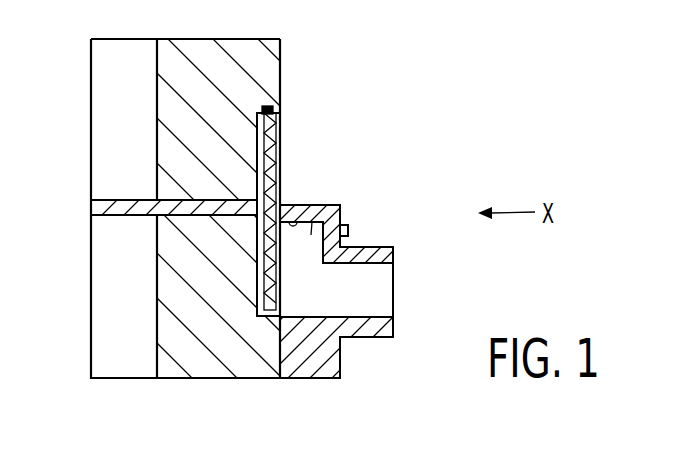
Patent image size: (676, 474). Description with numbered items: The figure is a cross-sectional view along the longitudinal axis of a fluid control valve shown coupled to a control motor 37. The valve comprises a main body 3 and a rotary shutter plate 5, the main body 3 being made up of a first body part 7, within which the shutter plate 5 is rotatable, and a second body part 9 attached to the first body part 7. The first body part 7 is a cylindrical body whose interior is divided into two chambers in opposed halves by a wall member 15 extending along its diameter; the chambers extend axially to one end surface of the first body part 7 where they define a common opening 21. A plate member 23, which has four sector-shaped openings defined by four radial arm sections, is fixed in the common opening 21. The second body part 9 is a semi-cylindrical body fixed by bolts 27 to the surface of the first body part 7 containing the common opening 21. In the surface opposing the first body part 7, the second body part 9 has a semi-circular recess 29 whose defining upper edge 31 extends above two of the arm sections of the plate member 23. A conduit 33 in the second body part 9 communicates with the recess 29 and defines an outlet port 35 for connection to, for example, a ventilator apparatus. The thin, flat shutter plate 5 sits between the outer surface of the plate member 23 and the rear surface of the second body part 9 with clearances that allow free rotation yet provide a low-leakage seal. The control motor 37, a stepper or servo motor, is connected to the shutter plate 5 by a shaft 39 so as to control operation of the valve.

The main body 3 is at (340, 387).
The rotary shutter plate 5 is at (292, 117).
The first body part 7 is at (263, 50).
The second body part 9 is at (343, 360).
The wall member 15 is at (220, 73).
The common opening 21 is at (297, 151).
The plate member 23 is at (282, 92).
The bolts 27 is at (350, 229).
The recess 29 is at (338, 205).
The upper edge 31 is at (307, 205).
The conduit 33 is at (381, 242).
The outlet port 35 is at (404, 287).
The control motor 37 is at (120, 93).
The shaft 39 is at (120, 207).